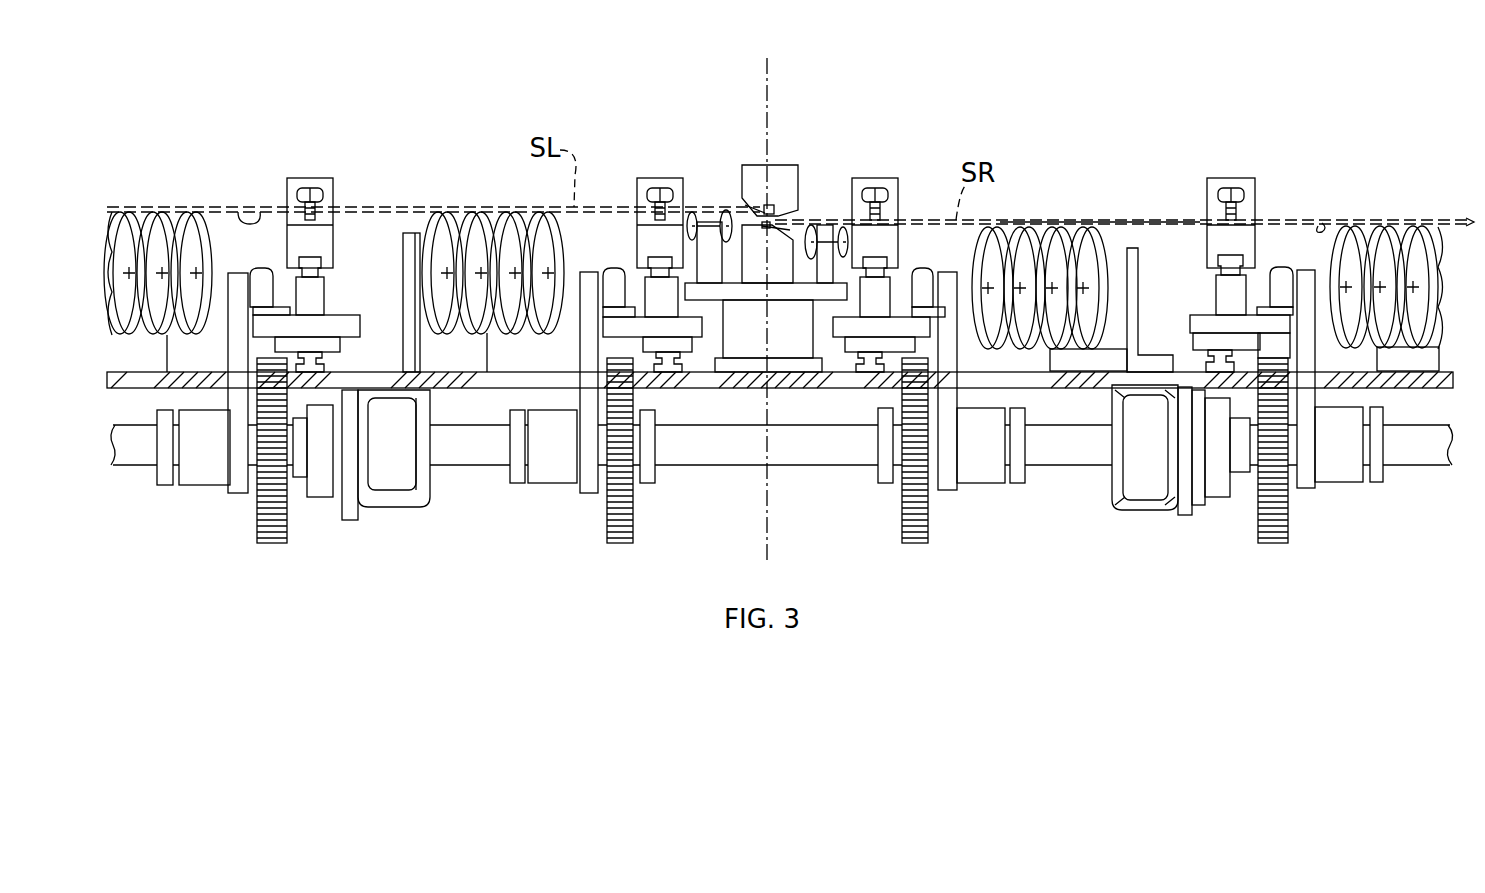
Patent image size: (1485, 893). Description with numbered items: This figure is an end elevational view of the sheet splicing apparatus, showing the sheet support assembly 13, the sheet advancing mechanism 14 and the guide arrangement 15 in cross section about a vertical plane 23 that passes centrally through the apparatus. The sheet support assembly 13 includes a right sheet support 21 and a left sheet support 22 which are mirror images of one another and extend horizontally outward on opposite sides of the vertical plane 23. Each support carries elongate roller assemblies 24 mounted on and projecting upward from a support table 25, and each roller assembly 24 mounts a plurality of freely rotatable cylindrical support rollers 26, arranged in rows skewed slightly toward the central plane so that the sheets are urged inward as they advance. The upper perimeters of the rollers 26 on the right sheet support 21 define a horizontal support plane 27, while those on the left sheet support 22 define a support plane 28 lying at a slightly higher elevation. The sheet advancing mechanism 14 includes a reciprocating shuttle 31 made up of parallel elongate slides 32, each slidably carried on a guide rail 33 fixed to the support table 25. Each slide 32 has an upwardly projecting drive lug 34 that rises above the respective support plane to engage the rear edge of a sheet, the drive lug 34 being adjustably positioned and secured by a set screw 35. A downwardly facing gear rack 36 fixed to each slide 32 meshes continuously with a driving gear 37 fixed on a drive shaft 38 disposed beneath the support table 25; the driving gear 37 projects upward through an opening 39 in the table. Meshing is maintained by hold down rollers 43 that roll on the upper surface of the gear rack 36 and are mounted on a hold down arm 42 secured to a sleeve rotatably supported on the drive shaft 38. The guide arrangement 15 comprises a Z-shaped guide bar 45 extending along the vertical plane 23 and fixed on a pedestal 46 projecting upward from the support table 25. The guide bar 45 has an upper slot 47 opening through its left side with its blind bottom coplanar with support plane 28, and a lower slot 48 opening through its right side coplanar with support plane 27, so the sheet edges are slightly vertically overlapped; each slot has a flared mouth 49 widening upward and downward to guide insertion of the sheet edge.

The sheet support assembly 13 is at (1425, 166).
The sheet advancing mechanism 14 is at (300, 165).
The guide arrangement 15 is at (745, 162).
The right sheet support 21 is at (1128, 212).
The left sheet support 22 is at (518, 198).
The vertical plane 23 is at (769, 76).
The roller assembly 24 is at (401, 268).
The support table 25 is at (455, 380).
The support roller 26 is at (452, 222).
The support plane 27 is at (1322, 223).
The support plane 28 is at (245, 212).
The reciprocating shuttle 31 is at (905, 245).
The slide 32 is at (1222, 292).
The guide rail 33 is at (1211, 362).
The drive lug 34 is at (1240, 185).
The set screw 35 is at (1220, 192).
The gear rack 36 is at (1290, 340).
The driving gear 37 is at (1280, 518).
The drive shaft 38 is at (1062, 445).
The opening 39 is at (1046, 378).
The hold down arm 42 is at (1308, 282).
The hold down roller 43 is at (1284, 268).
The guide bar 45 is at (784, 172).
The pedestal 46 is at (791, 348).
The upper slot 47 is at (770, 182).
The slot 48 is at (762, 232).
The flared mouth 49 is at (800, 213).